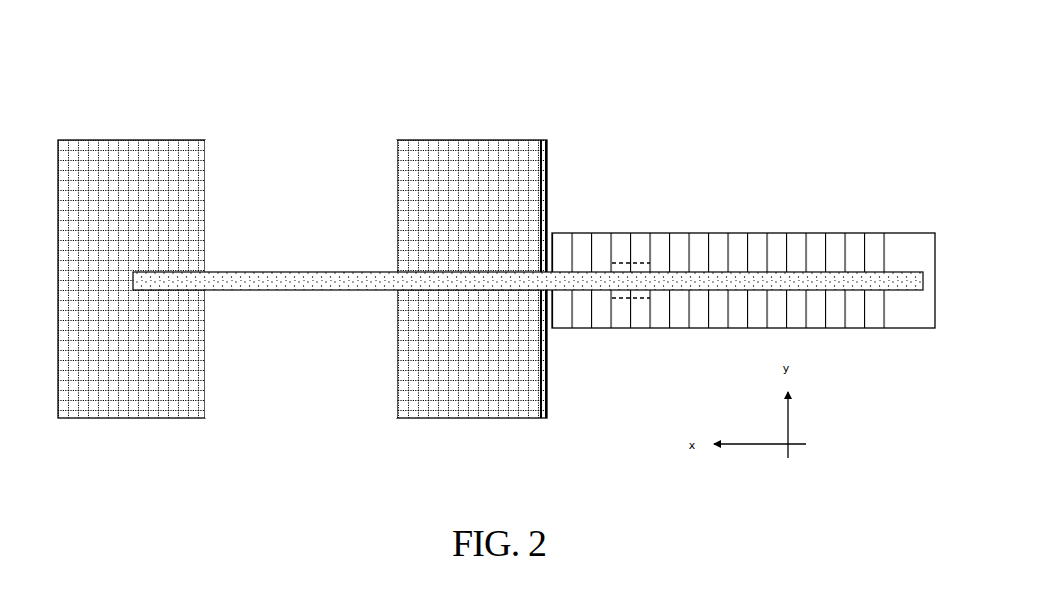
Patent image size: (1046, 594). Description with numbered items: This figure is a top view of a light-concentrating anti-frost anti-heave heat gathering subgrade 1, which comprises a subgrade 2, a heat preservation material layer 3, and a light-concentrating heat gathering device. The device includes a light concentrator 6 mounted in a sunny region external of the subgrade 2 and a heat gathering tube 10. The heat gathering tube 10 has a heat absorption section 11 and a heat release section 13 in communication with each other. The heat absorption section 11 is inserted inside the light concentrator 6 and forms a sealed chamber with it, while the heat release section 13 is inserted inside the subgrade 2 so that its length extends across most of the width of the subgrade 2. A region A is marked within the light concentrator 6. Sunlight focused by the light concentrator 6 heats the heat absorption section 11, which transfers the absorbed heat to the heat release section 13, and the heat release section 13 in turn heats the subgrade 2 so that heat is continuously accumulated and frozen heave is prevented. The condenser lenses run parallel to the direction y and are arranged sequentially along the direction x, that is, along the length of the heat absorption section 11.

The light-concentrating anti-frost anti-heave heat gathering subgrade 1 is at (481, 25).
The subgrade 2 is at (252, 228).
The heat preservation material layer 3 is at (112, 140).
The light concentrator 6 is at (833, 231).
The heat gathering tube 10 is at (559, 266).
The heat absorption section 11 is at (755, 273).
The heat release section 13 is at (300, 272).
The region A is at (631, 262).